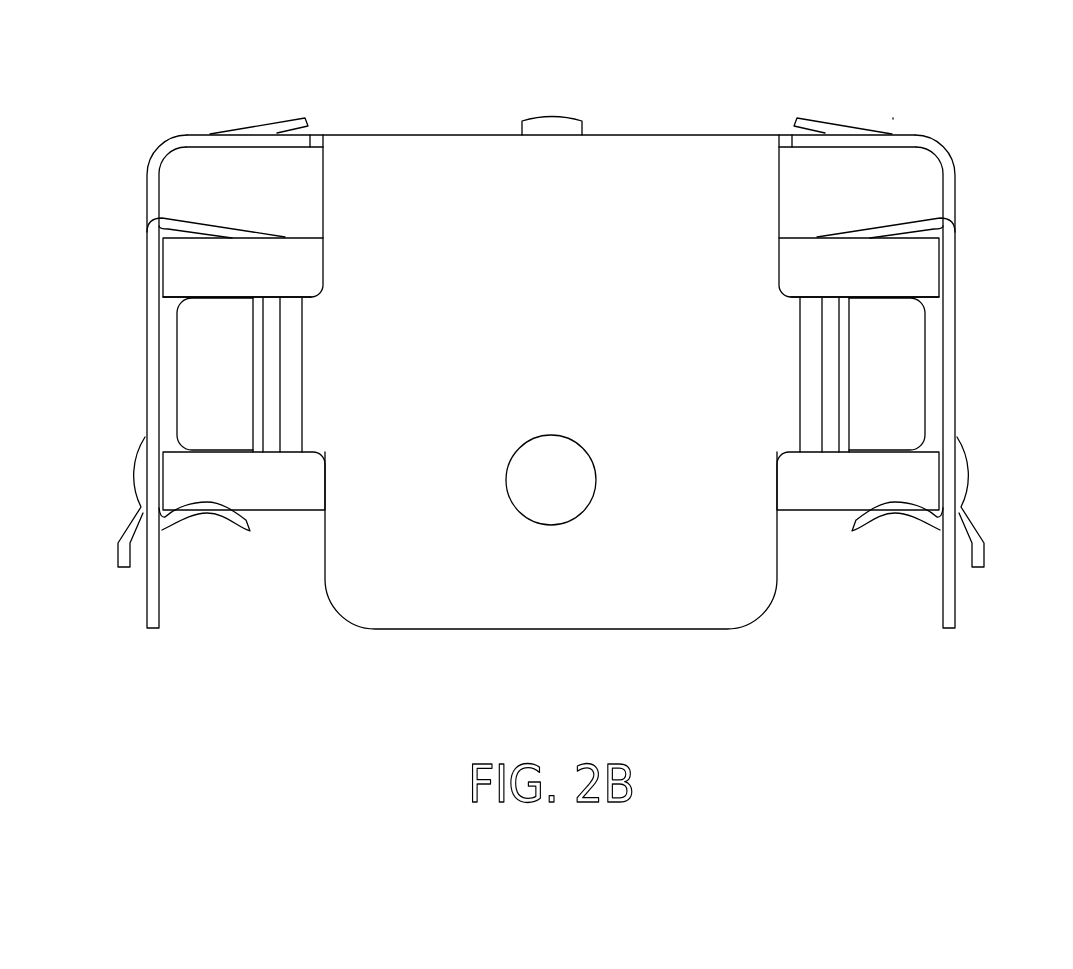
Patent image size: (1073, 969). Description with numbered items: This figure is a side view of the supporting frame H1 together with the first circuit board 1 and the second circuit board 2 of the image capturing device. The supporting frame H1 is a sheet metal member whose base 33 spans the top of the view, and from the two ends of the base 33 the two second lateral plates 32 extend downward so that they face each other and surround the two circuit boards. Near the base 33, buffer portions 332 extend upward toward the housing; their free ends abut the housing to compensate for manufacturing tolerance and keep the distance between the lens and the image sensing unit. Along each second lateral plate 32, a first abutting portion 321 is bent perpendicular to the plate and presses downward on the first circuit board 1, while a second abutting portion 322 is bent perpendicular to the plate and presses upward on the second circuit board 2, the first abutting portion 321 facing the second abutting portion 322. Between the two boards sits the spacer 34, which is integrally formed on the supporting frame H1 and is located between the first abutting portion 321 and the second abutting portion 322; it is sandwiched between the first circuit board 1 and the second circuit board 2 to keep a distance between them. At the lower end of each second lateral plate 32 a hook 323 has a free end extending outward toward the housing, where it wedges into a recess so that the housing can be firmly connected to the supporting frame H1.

The first circuit board 1 is at (928, 267).
The second circuit board 2 is at (928, 483).
The second lateral plate 32 is at (957, 323).
The base 33 is at (677, 148).
The spacer 34 is at (912, 390).
The first abutting portion 321 is at (930, 225).
The second abutting portion 322 is at (897, 510).
The hook 323 is at (985, 555).
The buffer portion 332 is at (827, 122).
The supporting frame H1 is at (893, 118).